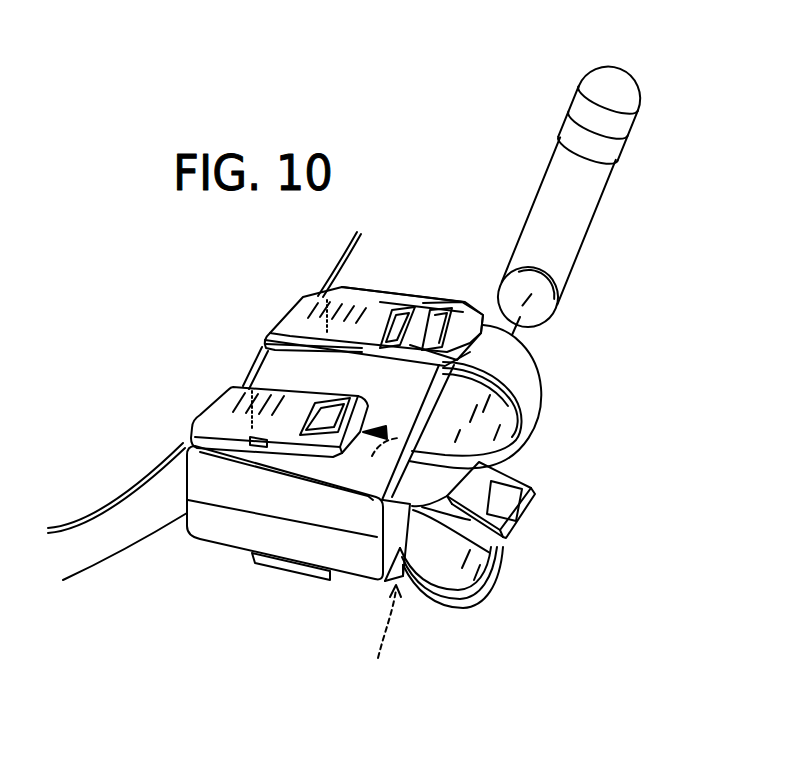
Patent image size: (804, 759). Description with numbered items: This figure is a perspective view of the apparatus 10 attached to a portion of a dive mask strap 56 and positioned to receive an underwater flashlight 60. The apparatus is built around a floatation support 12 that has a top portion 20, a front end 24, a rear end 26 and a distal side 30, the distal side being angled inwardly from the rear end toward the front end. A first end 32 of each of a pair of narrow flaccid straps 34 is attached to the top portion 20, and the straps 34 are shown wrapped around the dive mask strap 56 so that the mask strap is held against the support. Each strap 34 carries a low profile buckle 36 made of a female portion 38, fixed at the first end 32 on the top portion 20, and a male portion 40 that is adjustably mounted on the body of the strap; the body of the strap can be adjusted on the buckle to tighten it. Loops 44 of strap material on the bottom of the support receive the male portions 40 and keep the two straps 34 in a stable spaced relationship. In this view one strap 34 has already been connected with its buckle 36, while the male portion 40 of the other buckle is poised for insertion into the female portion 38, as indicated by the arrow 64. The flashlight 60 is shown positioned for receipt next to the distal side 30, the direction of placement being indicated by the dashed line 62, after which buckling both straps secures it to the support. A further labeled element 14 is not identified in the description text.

The apparatus 10 is at (332, 427).
The floatation support 12 is at (210, 540).
The front wall of housing 14 is at (250, 535).
The top portion 20 is at (282, 372).
The front end 24 is at (404, 285).
The rear end 26 is at (365, 563).
The distal side 30 is at (410, 575).
The first end 32 is at (364, 305).
The flaccid straps 34 is at (528, 367).
The buckle 36 is at (480, 298).
The female portion 38 is at (428, 300).
The male portion 40 is at (500, 473).
The loops 44 is at (302, 570).
The dive mask strap 56 is at (110, 527).
The underwater flashlight 60 is at (580, 217).
The dashed line 62 is at (376, 636).
The arrow 64 is at (372, 455).